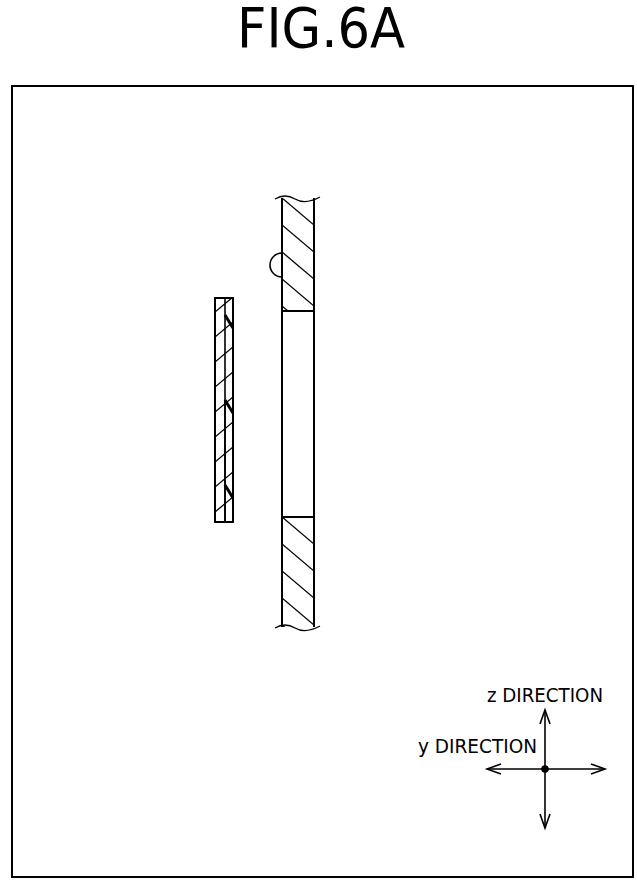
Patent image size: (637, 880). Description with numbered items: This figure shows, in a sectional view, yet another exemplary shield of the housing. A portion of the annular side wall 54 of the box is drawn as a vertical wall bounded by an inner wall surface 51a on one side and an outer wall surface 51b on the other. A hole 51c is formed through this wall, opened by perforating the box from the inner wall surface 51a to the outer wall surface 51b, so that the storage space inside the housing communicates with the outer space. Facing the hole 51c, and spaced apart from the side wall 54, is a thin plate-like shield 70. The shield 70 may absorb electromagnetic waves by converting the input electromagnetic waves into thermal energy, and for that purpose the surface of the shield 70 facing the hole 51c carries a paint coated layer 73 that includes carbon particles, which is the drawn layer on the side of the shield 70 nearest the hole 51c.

The side wall 54 is at (315, 206).
The inner wall surface 51a is at (270, 278).
The outer wall surface 51b is at (315, 235).
The hole 51c is at (296, 517).
The shield 70 is at (207, 292).
The paint coated layer 73 is at (225, 523).